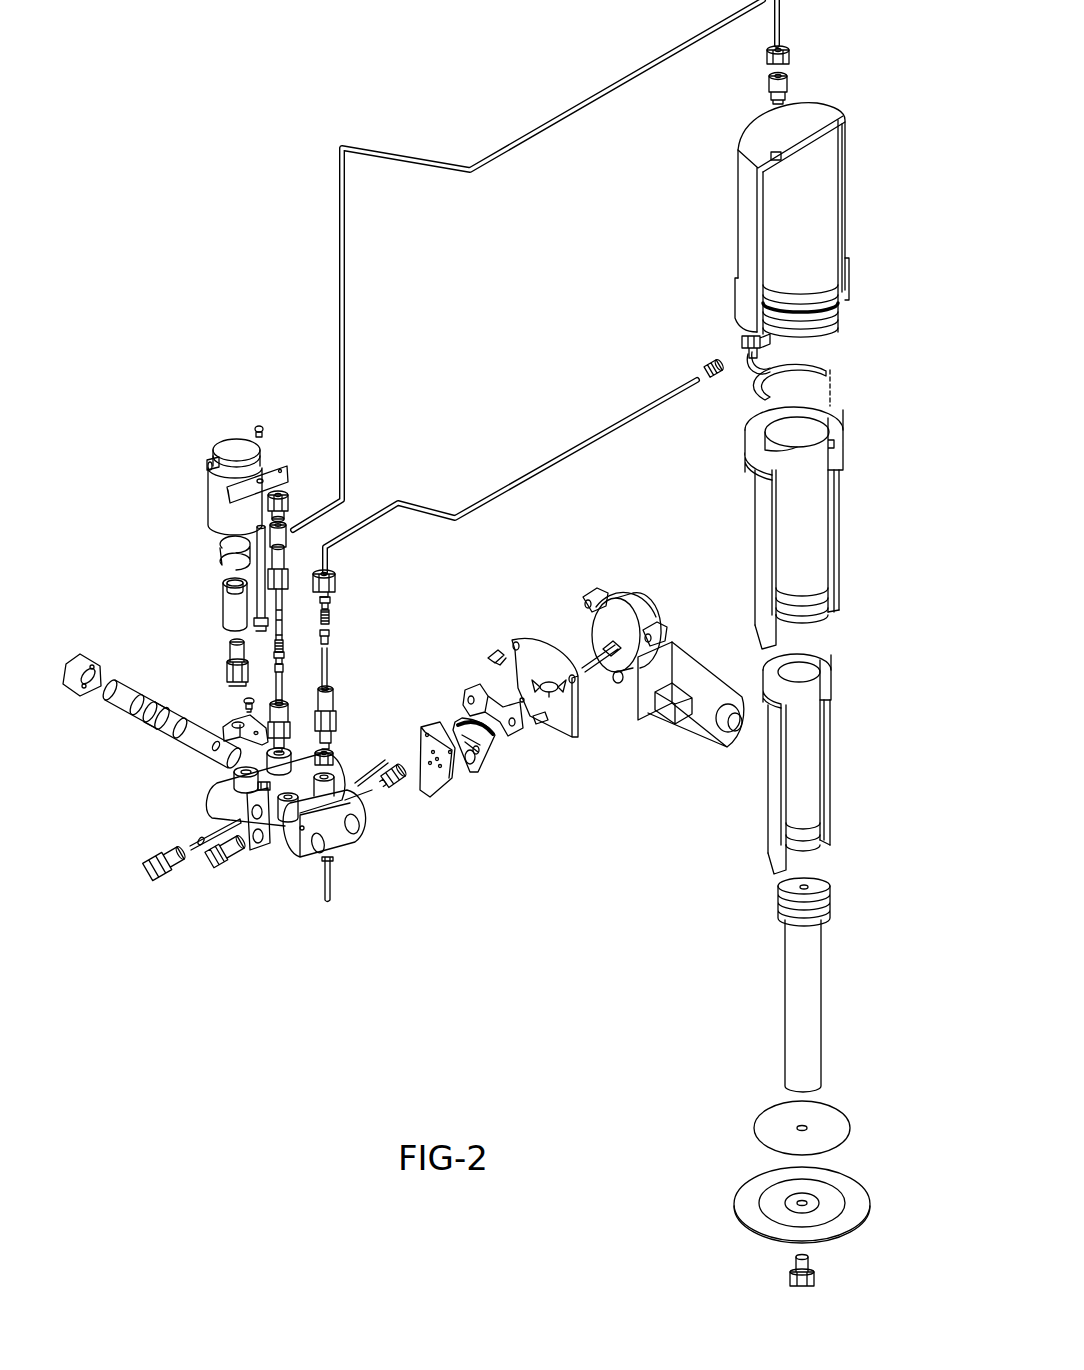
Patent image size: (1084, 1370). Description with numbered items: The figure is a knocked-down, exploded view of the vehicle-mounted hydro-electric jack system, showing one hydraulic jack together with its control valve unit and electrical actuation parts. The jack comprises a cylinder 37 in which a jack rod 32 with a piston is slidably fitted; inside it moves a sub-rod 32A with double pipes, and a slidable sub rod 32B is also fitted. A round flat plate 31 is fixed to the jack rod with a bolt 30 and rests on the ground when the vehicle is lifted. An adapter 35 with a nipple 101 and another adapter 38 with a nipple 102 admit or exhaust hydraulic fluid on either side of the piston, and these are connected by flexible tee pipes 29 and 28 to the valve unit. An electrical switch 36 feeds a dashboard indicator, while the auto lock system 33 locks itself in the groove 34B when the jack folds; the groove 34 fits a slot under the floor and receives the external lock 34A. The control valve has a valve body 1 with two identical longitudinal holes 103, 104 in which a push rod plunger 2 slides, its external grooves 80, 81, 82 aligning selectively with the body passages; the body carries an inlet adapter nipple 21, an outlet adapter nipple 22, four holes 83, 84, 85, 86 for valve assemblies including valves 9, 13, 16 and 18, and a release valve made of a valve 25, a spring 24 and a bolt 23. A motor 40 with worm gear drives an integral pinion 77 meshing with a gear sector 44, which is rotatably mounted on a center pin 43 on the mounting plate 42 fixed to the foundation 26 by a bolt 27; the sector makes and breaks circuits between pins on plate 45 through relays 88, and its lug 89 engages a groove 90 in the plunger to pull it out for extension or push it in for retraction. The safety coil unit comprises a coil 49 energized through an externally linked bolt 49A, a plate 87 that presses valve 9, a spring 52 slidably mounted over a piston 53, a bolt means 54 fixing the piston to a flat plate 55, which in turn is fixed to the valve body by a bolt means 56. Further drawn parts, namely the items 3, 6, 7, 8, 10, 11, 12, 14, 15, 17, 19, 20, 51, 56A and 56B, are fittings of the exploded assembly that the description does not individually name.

The valve body 1 is at (265, 855).
The push rod plunger 2 is at (118, 683).
The pipe clamp 3 is at (82, 658).
The mounting bracket 6 is at (283, 482).
The nut 7 is at (291, 503).
The union fitting 8 is at (286, 565).
The valve 9 is at (282, 635).
The spring 10 is at (283, 652).
The washer 11 is at (284, 664).
The valve stem assembly 12 is at (275, 660).
The valve 13 is at (283, 678).
The inlet fitting 14 is at (290, 740).
The outlet fitting 15 is at (334, 705).
The valve 16 is at (328, 670).
The washer 17 is at (328, 646).
The valve 18 is at (328, 620).
The washer 19 is at (328, 608).
The nut 20 is at (330, 600).
The adapter nipple 21 is at (432, 798).
The adapter nipple 22 is at (212, 862).
The bolt 23 is at (152, 880).
The spring 24 is at (195, 842).
The valve 25 is at (200, 836).
The foundation 26 is at (322, 800).
The bolt 27 is at (328, 902).
The flexible tee pipe 28 is at (418, 503).
The flexible tee pipe 29 is at (346, 452).
The bolt 30 is at (795, 1268).
The round flat plate 31 is at (756, 1178).
The jack rod 32 is at (787, 950).
The sub-rod 32A is at (768, 790).
The slidable sub rod 32B is at (760, 508).
The auto lock system 33 is at (770, 1125).
The groove 34 is at (840, 325).
The external lock 34A is at (838, 330).
The groove 34B is at (835, 322).
The adapter 35 is at (747, 358).
The electrical switch 36 is at (742, 342).
The cylinder 37 is at (745, 183).
The adapter 38 is at (771, 98).
The motor 40 is at (622, 605).
The mounting plate 42 is at (572, 738).
The center pin 43 is at (541, 728).
The gear sector 44 is at (482, 745).
The plate 45 is at (445, 785).
The coil 49 is at (215, 495).
The bolt 49A is at (210, 462).
The cap 51 is at (233, 450).
The spring 52 is at (222, 555).
The piston 53 is at (228, 590).
The bolt means 54 is at (230, 668).
The flat plate 55 is at (228, 726).
The bolt means 56 is at (247, 702).
The tube 56A is at (255, 535).
The screw 56B is at (260, 432).
The pinion 77 is at (612, 668).
The groove 80 is at (167, 730).
The groove 81 is at (153, 720).
The groove 82 is at (133, 714).
The hole 83 is at (362, 805).
The hole 84 is at (290, 850).
The hole 85 is at (228, 792).
The hole 86 is at (250, 766).
The plate 87 is at (279, 465).
The relay 88 is at (660, 700).
The lug 89 is at (473, 770).
The groove 90 is at (208, 755).
The nipple 101 is at (717, 365).
The nipple 102 is at (770, 65).
The longitudinal hole 103 is at (322, 845).
The longitudinal hole 104 is at (352, 828).